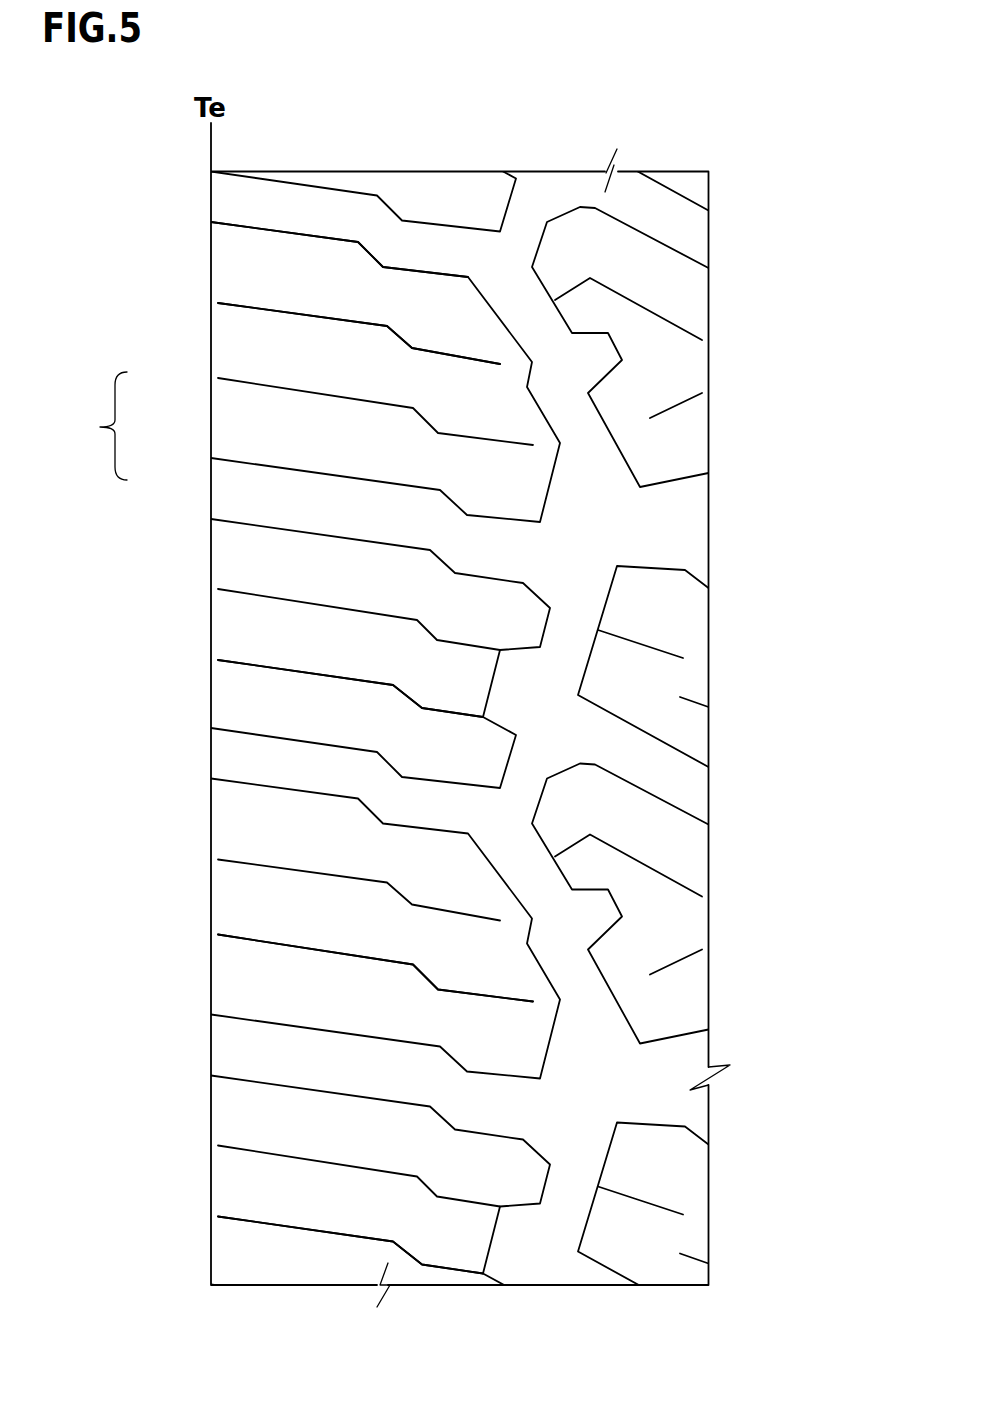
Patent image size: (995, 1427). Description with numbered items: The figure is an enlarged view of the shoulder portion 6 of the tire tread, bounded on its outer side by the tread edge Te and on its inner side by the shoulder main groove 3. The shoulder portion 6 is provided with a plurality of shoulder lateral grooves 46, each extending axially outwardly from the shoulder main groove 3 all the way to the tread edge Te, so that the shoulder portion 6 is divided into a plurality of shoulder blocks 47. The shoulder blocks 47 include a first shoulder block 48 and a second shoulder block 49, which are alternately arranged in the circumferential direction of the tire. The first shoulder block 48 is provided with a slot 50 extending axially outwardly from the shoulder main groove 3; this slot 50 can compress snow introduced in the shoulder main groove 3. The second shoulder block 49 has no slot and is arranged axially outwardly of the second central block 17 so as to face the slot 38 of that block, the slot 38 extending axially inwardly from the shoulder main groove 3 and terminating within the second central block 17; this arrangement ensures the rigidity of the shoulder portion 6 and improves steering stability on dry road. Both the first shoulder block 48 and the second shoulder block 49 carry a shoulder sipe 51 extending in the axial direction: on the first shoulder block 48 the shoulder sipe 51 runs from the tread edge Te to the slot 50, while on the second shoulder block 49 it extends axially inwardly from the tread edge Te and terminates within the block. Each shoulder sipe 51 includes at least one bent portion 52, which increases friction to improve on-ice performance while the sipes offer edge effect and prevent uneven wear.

The shoulder main groove 3 is at (528, 210).
The shoulder portion 6 is at (319, 280).
The second central block 17 is at (648, 353).
The slot 38 is at (597, 355).
The shoulder lateral groove 46 is at (384, 232).
The shoulder block 47 is at (95, 426).
The first shoulder block 48 is at (350, 642).
The second shoulder block 49 is at (333, 353).
The slot 50 is at (513, 692).
The shoulder sipe 51 is at (288, 310).
The bent portion 52 is at (430, 628).